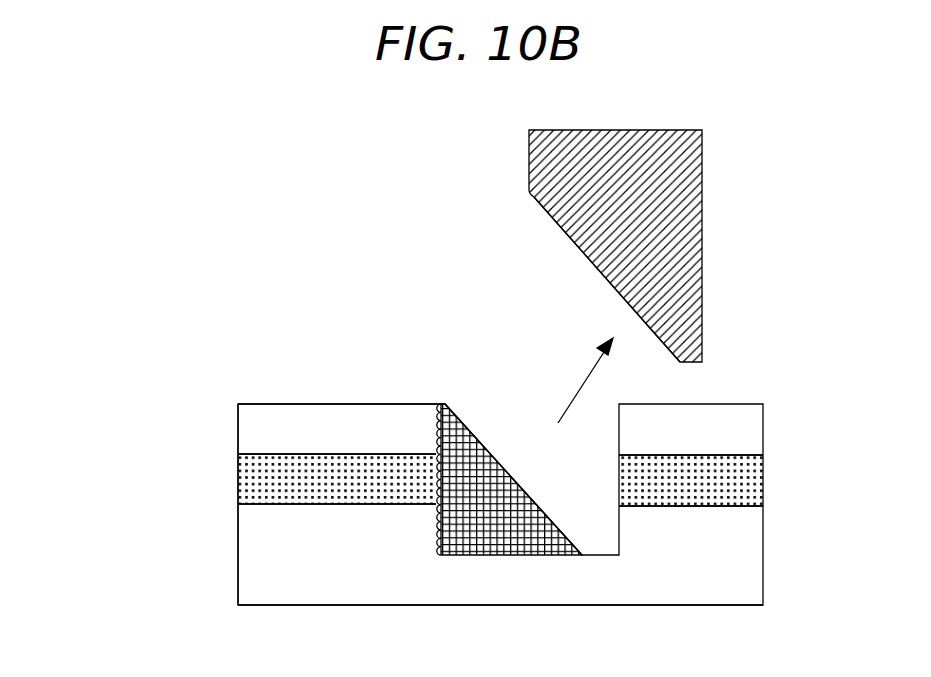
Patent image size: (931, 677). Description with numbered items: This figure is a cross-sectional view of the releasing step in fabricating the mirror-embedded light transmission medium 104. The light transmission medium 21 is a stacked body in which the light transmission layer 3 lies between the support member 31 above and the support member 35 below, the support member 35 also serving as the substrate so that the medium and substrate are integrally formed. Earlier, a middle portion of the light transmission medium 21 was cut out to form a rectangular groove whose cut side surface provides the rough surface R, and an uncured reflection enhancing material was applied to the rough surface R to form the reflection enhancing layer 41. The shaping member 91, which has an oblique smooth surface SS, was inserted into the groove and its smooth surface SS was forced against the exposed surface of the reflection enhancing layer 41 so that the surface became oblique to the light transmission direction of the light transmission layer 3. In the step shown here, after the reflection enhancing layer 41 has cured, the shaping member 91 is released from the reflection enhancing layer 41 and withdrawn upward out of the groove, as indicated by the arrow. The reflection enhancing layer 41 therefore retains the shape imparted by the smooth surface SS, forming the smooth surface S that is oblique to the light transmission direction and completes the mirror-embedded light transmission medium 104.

The mirror-embedded light transmission medium 104 is at (218, 356).
The light transmission medium 21 is at (167, 403).
The support member 31 is at (247, 431).
The light transmission layer 3 is at (247, 479).
The support member 35 is at (247, 552).
The reflection enhancing layer 41 is at (483, 458).
The shaping member 91 is at (703, 217).
The rough surface R is at (428, 442).
The smooth surface S is at (467, 428).
The smooth surface SS is at (562, 231).